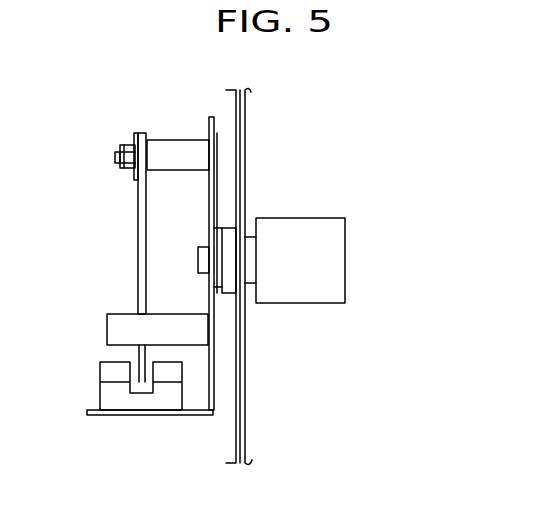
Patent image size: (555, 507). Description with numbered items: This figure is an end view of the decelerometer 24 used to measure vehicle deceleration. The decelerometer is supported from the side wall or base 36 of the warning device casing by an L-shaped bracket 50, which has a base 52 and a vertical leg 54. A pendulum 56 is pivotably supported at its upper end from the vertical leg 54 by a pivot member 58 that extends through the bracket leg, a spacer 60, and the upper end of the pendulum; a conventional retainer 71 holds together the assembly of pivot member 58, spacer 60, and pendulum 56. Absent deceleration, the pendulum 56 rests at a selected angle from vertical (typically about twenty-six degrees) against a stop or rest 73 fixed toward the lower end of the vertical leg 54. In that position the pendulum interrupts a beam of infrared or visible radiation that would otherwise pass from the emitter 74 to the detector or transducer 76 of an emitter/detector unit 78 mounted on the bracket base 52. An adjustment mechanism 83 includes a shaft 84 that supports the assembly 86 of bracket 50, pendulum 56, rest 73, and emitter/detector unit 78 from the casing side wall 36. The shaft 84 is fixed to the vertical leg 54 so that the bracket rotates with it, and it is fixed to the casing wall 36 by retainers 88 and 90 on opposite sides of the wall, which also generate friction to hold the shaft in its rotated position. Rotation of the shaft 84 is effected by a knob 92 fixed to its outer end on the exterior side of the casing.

The decelerometer 24 is at (109, 98).
The base 36 is at (246, 108).
The L-shaped bracket 50 is at (230, 202).
The base 52 is at (123, 416).
The vertical leg 54 is at (216, 131).
The pendulum 56 is at (126, 277).
The pivot member 58 is at (116, 156).
The spacer 60 is at (178, 140).
The retainer 71 is at (120, 170).
The stop or rest 73 is at (107, 326).
The emitter 74 is at (100, 372).
The detector or transducer 76 is at (182, 370).
The emitter/detector unit 78 is at (87, 397).
The adjustment mechanism 83 is at (194, 238).
The shaft 84 is at (198, 260).
The assembly 86 is at (120, 194).
The retainer 88 is at (243, 296).
The retainer 90 is at (230, 293).
The knob 92 is at (308, 303).